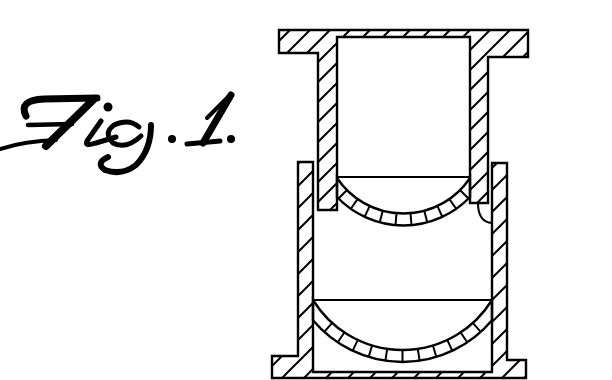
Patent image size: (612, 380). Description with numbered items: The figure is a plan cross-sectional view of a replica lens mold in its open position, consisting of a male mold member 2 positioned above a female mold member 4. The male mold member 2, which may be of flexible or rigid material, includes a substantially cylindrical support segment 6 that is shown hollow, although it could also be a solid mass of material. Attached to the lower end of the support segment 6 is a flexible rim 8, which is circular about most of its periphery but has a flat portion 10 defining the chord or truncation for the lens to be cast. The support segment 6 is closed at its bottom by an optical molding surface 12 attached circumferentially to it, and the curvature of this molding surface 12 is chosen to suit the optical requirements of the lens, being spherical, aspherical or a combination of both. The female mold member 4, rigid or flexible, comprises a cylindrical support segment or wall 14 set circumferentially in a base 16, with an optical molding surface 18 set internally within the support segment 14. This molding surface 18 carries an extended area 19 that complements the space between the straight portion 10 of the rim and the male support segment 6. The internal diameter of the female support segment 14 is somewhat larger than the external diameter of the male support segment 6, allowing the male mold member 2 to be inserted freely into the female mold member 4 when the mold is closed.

The male mold member 2 is at (420, 97).
The female mold member 4 is at (447, 288).
The cylindrical support segment 6 is at (488, 130).
The flexible rim 8 is at (334, 213).
The flat portion 10 is at (507, 227).
The optical molding surface 12 is at (437, 221).
The cylindrical support segment 14 is at (507, 282).
The base 16 is at (507, 347).
The optical molding surface 18 is at (340, 330).
The extended area 19 is at (486, 304).